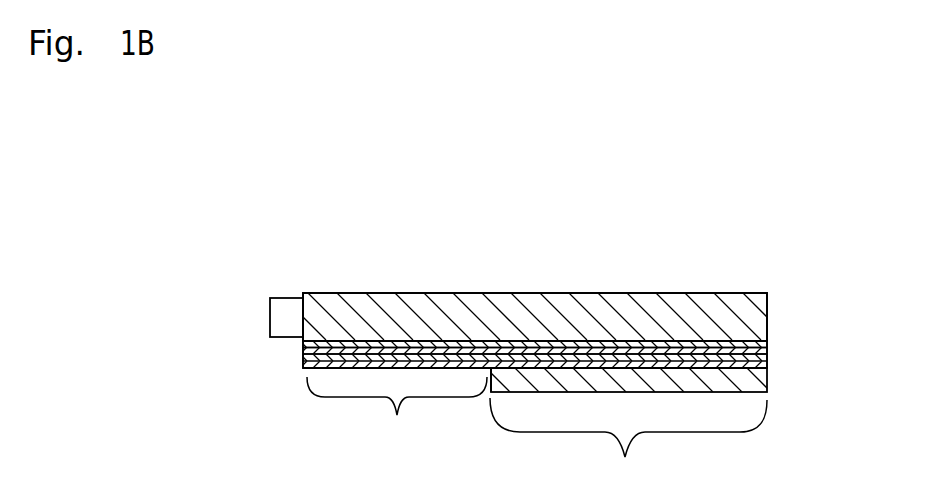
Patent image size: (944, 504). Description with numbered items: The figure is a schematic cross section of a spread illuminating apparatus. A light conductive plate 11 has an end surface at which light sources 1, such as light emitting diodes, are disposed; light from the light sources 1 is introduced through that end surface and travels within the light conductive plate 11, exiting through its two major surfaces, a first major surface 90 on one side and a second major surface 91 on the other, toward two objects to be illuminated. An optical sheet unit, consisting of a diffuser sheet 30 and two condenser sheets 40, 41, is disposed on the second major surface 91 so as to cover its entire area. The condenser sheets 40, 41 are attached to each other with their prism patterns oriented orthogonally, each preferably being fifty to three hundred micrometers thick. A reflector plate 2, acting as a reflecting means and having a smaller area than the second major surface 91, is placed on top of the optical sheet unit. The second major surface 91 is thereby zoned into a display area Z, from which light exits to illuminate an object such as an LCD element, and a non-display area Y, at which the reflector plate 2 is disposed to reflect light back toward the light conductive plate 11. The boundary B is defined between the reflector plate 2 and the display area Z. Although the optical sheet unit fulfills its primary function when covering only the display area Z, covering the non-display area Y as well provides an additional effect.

The light source 1 is at (282, 317).
The reflector plate 2 is at (767, 383).
The light conductive plate 11 is at (767, 320).
The diffuser sheet 30 is at (767, 350).
The condenser sheet 40 is at (767, 357).
The condenser sheet 41 is at (767, 364).
The first major surface 90 is at (622, 288).
The second major surface 91 is at (516, 329).
The display area Z is at (397, 416).
The non-display area Y is at (628, 449).
The boundary B is at (481, 407).